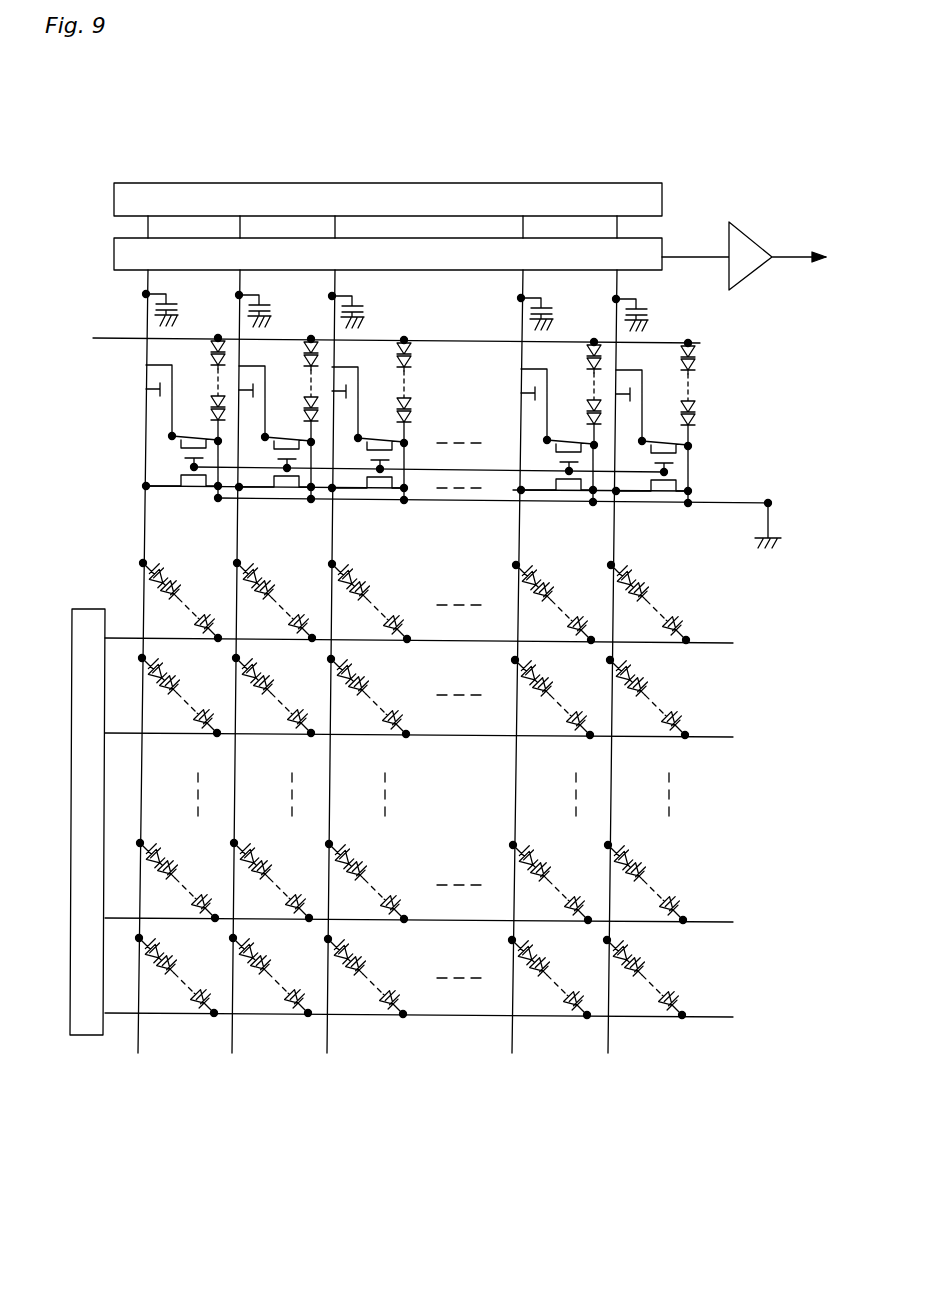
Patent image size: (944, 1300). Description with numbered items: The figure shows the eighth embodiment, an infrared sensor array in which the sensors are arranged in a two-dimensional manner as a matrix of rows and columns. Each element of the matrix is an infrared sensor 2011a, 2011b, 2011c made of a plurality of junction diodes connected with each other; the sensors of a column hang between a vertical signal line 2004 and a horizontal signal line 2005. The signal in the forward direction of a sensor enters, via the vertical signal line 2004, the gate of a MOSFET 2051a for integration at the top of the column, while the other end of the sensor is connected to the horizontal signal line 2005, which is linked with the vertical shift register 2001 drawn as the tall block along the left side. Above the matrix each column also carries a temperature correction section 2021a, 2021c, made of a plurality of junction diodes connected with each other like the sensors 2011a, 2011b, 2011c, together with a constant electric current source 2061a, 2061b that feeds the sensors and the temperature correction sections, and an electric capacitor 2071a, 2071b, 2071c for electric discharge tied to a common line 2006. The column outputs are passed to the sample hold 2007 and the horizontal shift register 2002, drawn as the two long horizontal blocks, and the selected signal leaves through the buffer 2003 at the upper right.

The vertical shift register 2001 is at (85, 1036).
The horizontal shift register 2002 is at (455, 197).
The buffer 2003 is at (785, 198).
The vertical signal line 2004 is at (145, 541).
The horizontal signal line 2005 is at (712, 1020).
The bias line 2006 is at (665, 343).
The sample hold 2007 is at (566, 252).
The infrared sensor 2011a is at (173, 993).
The infrared sensor 2011b is at (265, 993).
The infrared sensor 2011c is at (360, 990).
The temperature correction section 2021a is at (203, 397).
The temperature correction section 2021c is at (480, 392).
The MOSFET for integration 2051a is at (146, 390).
The constant electric current source 2061a is at (187, 472).
The constant electric current source 2061b is at (263, 488).
The electric capacitor for electric discharge 2071a is at (148, 313).
The electric capacitor for electric discharge 2071b is at (307, 298).
The electric capacitor for electric discharge 2071c is at (368, 315).